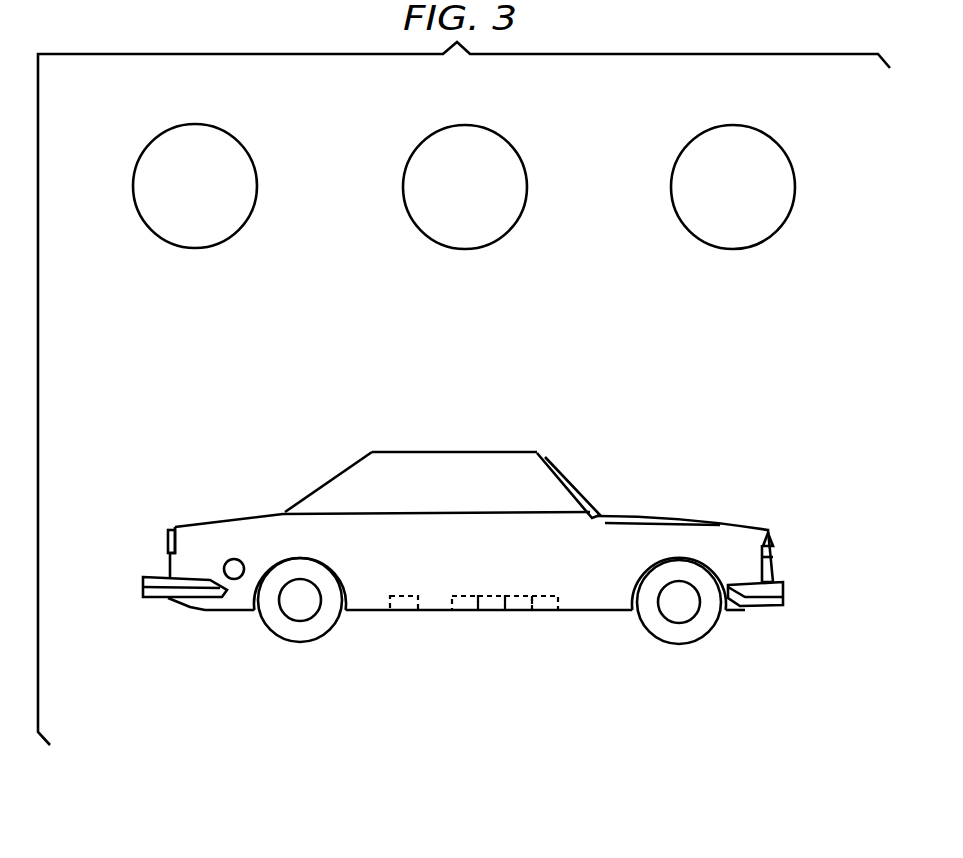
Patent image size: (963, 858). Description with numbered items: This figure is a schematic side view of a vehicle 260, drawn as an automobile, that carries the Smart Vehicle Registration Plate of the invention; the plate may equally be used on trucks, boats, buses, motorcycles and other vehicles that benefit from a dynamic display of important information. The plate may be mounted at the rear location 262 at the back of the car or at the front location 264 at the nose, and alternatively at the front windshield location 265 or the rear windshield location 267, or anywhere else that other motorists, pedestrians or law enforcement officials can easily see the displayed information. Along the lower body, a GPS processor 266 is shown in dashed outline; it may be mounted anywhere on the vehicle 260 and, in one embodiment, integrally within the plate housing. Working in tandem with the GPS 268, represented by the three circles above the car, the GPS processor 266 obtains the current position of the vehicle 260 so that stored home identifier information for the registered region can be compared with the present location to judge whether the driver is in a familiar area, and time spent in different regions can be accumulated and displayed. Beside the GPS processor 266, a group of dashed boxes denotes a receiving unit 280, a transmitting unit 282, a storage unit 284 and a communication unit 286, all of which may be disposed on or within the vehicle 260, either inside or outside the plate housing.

The vehicle 260 is at (428, 452).
The rear location 262 is at (164, 543).
The front location 264 is at (774, 547).
The front windshield location 265 is at (568, 472).
The GPS processor 266 is at (397, 612).
The rear windshield location 267 is at (332, 480).
The GPS 268 is at (226, 133).
The receiving unit 280 is at (457, 612).
The transmitting unit 282 is at (487, 612).
The storage unit 284 is at (515, 612).
The communication unit 286 is at (541, 612).